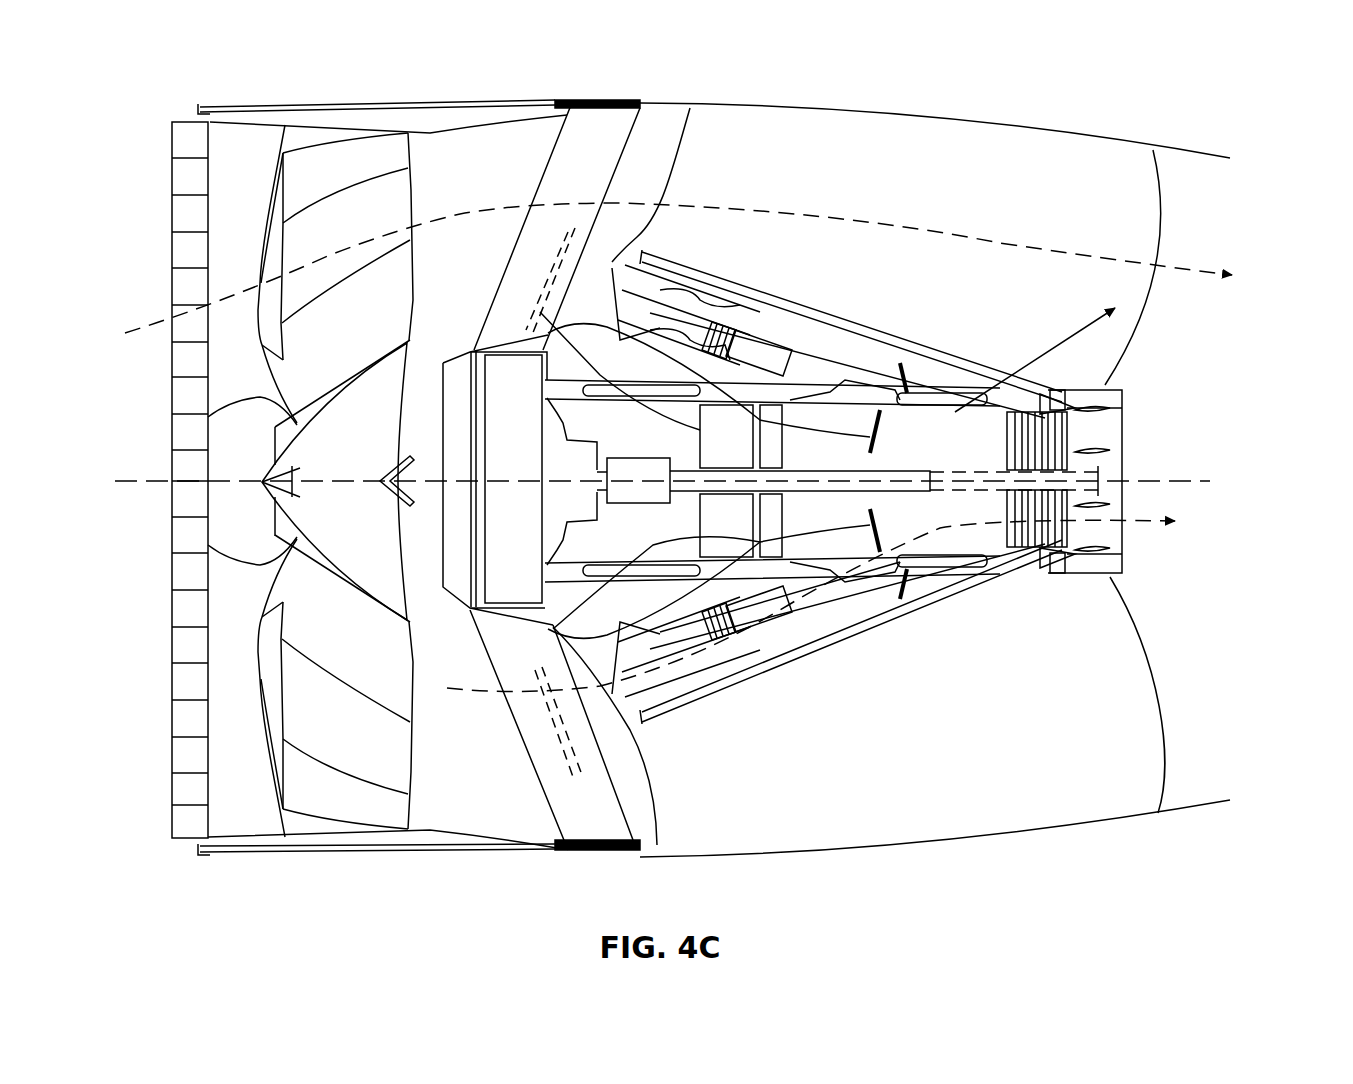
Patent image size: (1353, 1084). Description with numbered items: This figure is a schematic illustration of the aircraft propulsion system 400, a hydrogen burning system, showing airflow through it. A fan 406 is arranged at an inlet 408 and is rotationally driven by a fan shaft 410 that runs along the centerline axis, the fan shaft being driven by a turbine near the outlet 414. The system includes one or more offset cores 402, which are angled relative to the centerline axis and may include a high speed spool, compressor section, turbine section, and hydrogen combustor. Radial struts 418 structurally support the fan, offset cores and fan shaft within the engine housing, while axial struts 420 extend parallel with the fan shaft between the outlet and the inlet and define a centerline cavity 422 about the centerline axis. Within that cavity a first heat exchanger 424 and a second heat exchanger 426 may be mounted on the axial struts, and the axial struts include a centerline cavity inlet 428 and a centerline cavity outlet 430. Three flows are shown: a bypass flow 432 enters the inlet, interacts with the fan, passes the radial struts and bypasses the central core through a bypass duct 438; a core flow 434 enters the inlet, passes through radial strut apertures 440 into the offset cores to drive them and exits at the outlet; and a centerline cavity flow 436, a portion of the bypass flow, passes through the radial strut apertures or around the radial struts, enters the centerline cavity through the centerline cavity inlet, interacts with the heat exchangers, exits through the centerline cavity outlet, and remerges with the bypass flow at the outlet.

The aircraft propulsion system 400 is at (1246, 76).
The offset core 402 is at (744, 310).
The fan 406 is at (340, 160).
The inlet 408 is at (166, 432).
The fan shaft 410 is at (898, 483).
The outlet 414 is at (1137, 443).
The radial strut 418 is at (598, 140).
The axial strut 420 is at (1015, 560).
The centerline cavity 422 is at (626, 549).
The first heat exchanger 424 is at (718, 540).
The second heat exchanger 426 is at (778, 540).
The centerline cavity inlet 428 is at (640, 555).
The centerline cavity outlet 430 is at (945, 563).
The bypass flow 432 is at (835, 212).
The core flow 434 is at (483, 695).
The centerline cavity flow 436 is at (1042, 330).
The bypass duct 438 is at (755, 135).
The radial strut aperture 440 is at (543, 275).